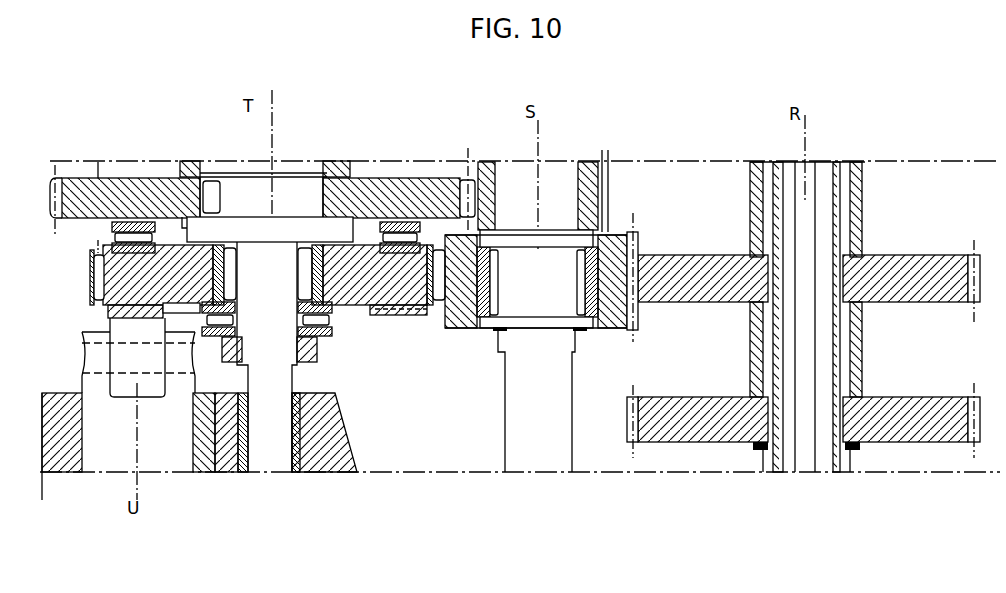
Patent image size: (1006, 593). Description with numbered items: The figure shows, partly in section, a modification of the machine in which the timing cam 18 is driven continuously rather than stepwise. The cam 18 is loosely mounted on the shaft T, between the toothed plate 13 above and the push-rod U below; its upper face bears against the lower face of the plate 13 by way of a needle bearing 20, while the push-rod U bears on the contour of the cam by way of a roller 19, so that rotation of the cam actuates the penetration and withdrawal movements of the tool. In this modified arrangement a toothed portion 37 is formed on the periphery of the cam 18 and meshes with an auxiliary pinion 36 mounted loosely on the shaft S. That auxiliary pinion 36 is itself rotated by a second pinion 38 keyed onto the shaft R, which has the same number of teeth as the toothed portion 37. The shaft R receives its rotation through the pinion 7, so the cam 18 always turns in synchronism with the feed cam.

The toothed plate 13 is at (70, 192).
The needle bearing 20 is at (133, 220).
The toothed portion 37 is at (98, 276).
The roller 19 is at (117, 328).
The timing cam 18 is at (397, 298).
The auxiliary pinion 36 is at (607, 320).
The second pinion 38 is at (942, 272).
The pinion 7 is at (950, 423).